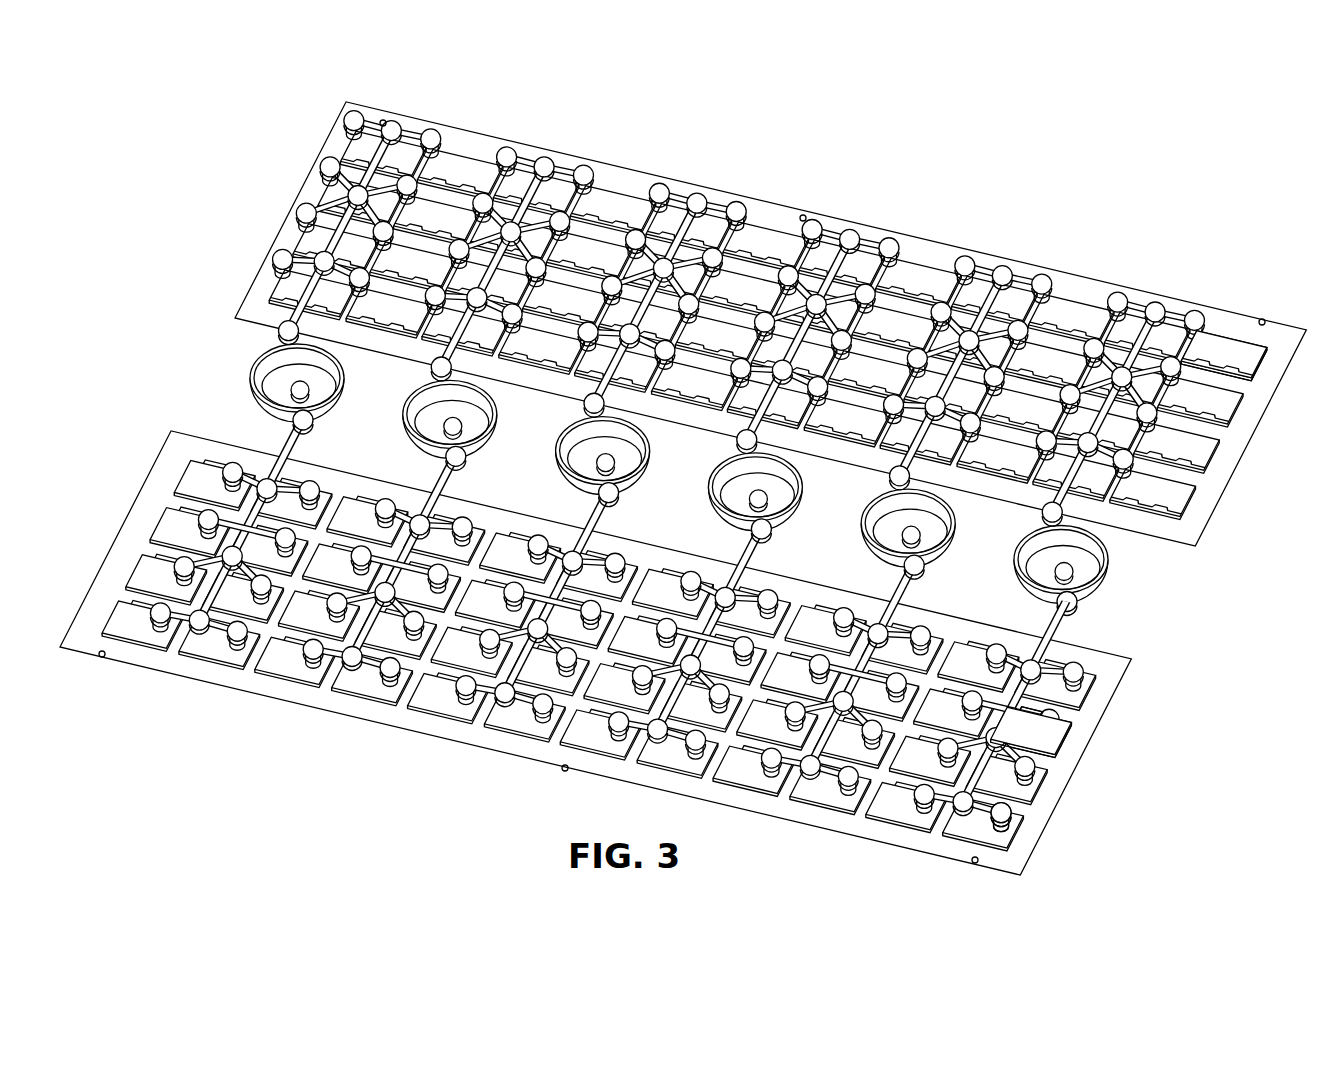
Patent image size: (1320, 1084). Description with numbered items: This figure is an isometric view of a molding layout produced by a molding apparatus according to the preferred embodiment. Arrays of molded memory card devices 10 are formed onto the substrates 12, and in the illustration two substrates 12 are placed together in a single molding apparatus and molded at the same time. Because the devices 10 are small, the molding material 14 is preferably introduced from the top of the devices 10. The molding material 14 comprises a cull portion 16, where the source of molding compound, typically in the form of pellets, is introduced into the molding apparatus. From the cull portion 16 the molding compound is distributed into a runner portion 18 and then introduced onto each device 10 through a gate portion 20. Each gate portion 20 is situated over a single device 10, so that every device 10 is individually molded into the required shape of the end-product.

The molded memory card device 10 is at (1230, 341).
The substrate 12 is at (1244, 435).
The molding material 14 is at (1165, 620).
The cull portion 16 is at (1118, 579).
The runner portion 18 is at (1020, 728).
The gate portion 20 is at (1021, 830).